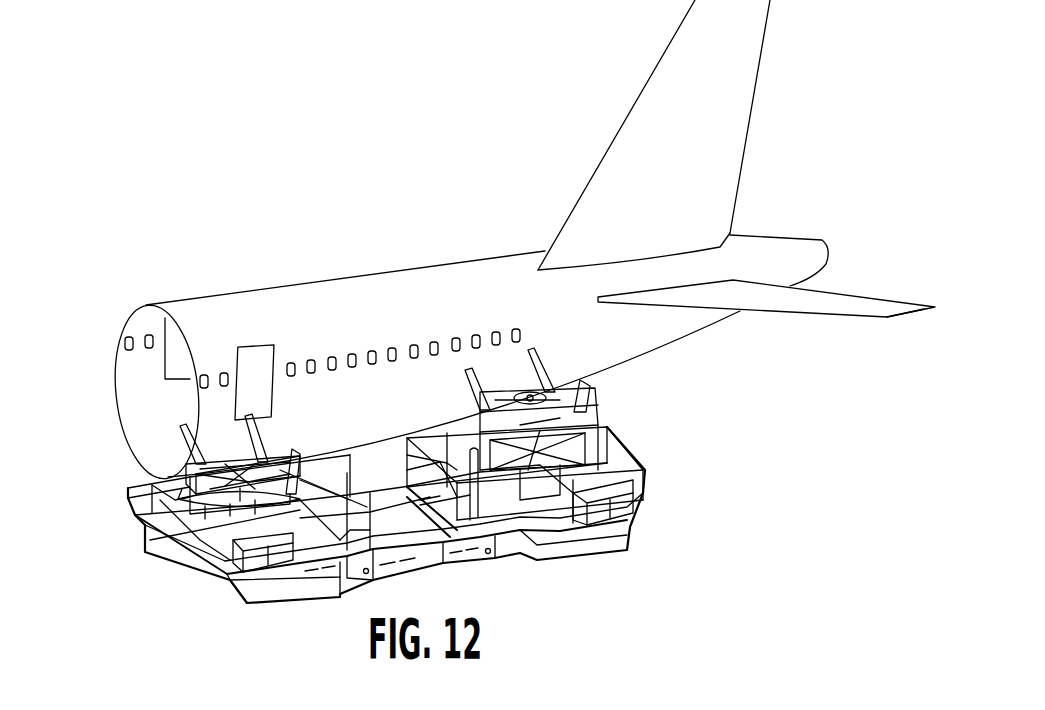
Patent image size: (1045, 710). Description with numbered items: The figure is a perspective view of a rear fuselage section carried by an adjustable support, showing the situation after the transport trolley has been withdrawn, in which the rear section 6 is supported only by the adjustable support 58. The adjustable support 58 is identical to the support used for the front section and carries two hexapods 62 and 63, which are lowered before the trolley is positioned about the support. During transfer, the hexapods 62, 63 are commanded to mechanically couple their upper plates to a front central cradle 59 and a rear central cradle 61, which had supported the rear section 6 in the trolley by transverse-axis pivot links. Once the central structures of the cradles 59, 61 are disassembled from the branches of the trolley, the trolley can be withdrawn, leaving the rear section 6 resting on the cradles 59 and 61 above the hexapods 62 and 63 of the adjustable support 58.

The rear section 6 is at (326, 192).
The adjustable support 58 is at (487, 575).
The front central cradle 59 is at (175, 480).
The rear central cradle 61 is at (606, 407).
The hexapod 62 is at (133, 512).
The hexapod 63 is at (624, 437).